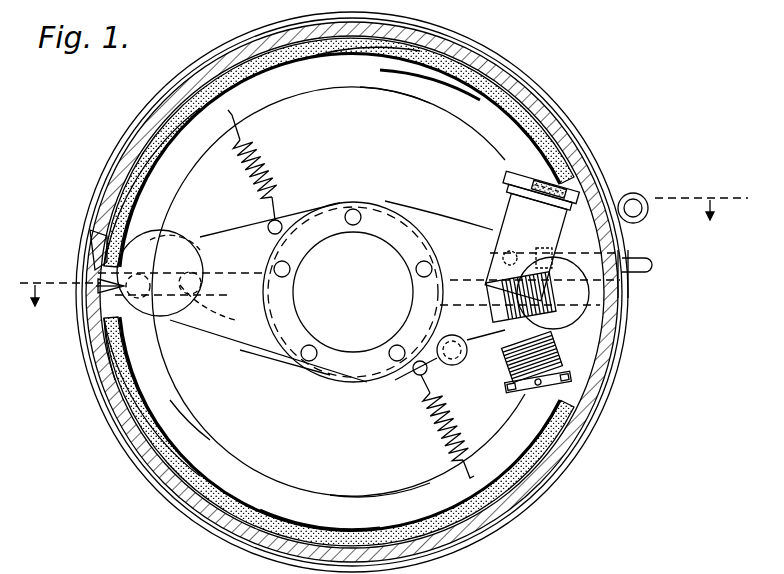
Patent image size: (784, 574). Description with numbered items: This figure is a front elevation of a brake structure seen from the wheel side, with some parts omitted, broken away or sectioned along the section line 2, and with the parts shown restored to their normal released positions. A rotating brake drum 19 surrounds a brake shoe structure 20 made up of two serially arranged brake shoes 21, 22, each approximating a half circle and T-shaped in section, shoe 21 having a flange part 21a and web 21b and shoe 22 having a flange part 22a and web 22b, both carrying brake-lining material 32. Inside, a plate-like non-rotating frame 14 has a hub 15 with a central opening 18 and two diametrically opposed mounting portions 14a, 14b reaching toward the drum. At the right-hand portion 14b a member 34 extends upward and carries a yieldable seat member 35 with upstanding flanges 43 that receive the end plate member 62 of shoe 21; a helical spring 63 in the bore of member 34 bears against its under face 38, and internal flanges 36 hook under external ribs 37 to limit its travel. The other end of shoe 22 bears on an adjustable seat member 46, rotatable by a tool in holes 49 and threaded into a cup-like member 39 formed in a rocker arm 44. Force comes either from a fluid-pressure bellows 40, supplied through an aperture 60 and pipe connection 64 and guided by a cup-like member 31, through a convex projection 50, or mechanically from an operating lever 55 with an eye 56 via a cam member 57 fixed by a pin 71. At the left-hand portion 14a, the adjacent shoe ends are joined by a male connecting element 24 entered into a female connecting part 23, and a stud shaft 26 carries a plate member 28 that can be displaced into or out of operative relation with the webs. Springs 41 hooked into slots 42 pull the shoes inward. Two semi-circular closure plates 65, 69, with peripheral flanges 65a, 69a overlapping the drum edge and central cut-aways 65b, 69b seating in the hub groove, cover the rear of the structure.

The section line 2— 2 is at (384, 241).
The frame 14 is at (428, 208).
The left-hand mounting portion of frame 14a is at (223, 342).
The right-hand mounting portion of frame 14b is at (562, 301).
The hub 15 is at (368, 381).
The central opening 18 is at (379, 240).
The brake drum 19 is at (102, 360).
The brake shoe structure 20 is at (197, 421).
The brake shoe 21 is at (318, 91).
The flange part of brake shoe 21 21a is at (434, 67).
The web of brake shoe 21 21b is at (388, 91).
The brake shoe 22 is at (282, 470).
The flange part of brake shoe 22 22a is at (318, 529).
The web of brake shoe 22 22b is at (380, 493).
The female connecting part 23 is at (103, 240).
The male connecting element 24 is at (123, 309).
The stud shaft 26 is at (245, 342).
The plate member 28 is at (160, 230).
The cup-like member 31 is at (556, 277).
The brake-lining material 32 is at (108, 180).
The member 34 is at (507, 212).
The seat member 35 is at (580, 192).
The internal flanges 36 is at (500, 200).
The external ribs 37 is at (508, 188).
The under face of seat member 38 is at (505, 173).
The cup-like member 39 is at (560, 337).
The bellows 40 is at (566, 312).
The spring 41 is at (268, 160).
The slot 42 is at (232, 108).
The upstanding flange 43 is at (530, 168).
The rocker arm 44 is at (487, 372).
The seat member 46 is at (548, 389).
The holes 49 is at (565, 373).
The convex projection 50 is at (482, 328).
The operating lever 55 is at (628, 197).
The eye 56 is at (640, 220).
The cam member 57 is at (487, 323).
The aperture 60 is at (505, 252).
The end plate member 62 is at (570, 182).
The helical spring 63 is at (532, 194).
The pipe connection 64 is at (652, 270).
The closure plate 65 is at (339, 152).
The peripheral flange of plate 65 65a is at (122, 148).
The central cut-away of plate 65 65b is at (354, 201).
The closure plate 69 is at (339, 431).
The peripheral flange of plate 69 69a is at (118, 399).
The central cut-away of plate 69 69b is at (289, 357).
The pin 71 is at (451, 377).